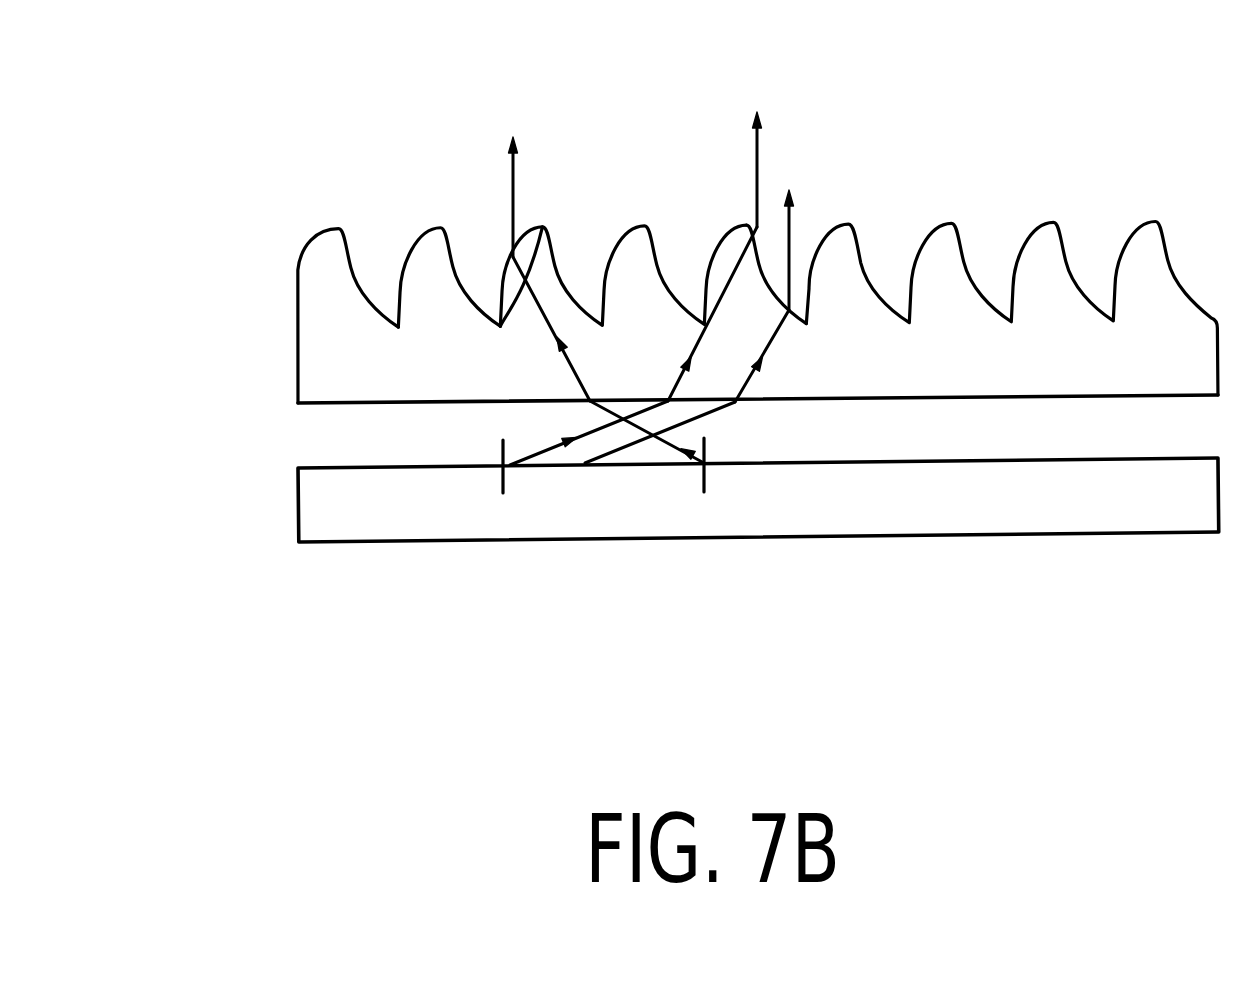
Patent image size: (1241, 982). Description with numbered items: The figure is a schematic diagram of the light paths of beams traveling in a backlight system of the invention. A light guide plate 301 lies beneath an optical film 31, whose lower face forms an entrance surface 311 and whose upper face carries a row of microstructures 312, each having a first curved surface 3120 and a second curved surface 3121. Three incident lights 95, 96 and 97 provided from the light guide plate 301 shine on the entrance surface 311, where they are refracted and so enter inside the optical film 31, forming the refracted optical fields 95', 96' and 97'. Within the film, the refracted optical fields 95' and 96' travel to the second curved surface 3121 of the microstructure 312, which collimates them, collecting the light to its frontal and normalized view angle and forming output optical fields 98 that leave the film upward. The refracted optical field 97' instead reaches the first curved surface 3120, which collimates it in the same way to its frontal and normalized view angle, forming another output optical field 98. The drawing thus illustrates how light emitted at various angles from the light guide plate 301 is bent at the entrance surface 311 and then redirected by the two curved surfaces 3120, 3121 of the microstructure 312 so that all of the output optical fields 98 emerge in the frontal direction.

The optical film 31 is at (683, 268).
The entrance surface 311 is at (330, 404).
The microstructure 312 is at (398, 213).
The first curved surface 3120 is at (512, 263).
The second curved surface 3121 is at (762, 230).
The light guide plate 301 is at (310, 512).
The incident light 95 is at (718, 519).
The refracted optical field 95' is at (876, 473).
The incident light 96 is at (580, 518).
The refracted optical field 96' is at (700, 264).
The incident light 97 is at (644, 518).
The refracted optical field 97' is at (566, 275).
The output optical field 98 is at (513, 187).